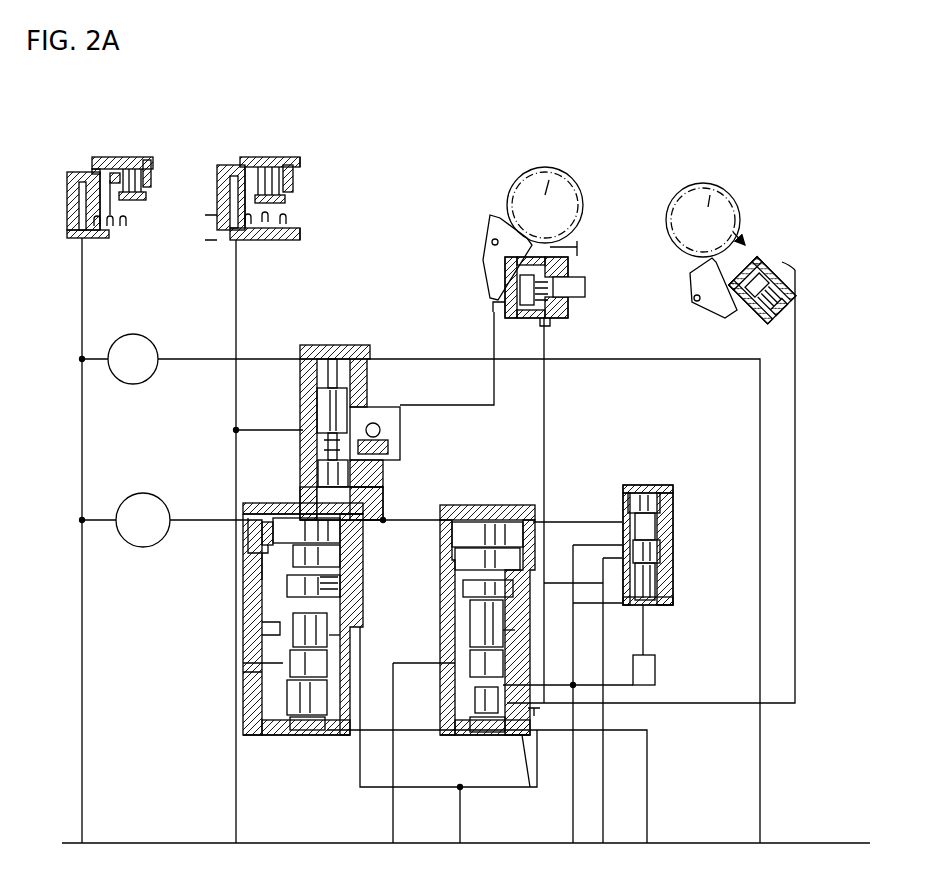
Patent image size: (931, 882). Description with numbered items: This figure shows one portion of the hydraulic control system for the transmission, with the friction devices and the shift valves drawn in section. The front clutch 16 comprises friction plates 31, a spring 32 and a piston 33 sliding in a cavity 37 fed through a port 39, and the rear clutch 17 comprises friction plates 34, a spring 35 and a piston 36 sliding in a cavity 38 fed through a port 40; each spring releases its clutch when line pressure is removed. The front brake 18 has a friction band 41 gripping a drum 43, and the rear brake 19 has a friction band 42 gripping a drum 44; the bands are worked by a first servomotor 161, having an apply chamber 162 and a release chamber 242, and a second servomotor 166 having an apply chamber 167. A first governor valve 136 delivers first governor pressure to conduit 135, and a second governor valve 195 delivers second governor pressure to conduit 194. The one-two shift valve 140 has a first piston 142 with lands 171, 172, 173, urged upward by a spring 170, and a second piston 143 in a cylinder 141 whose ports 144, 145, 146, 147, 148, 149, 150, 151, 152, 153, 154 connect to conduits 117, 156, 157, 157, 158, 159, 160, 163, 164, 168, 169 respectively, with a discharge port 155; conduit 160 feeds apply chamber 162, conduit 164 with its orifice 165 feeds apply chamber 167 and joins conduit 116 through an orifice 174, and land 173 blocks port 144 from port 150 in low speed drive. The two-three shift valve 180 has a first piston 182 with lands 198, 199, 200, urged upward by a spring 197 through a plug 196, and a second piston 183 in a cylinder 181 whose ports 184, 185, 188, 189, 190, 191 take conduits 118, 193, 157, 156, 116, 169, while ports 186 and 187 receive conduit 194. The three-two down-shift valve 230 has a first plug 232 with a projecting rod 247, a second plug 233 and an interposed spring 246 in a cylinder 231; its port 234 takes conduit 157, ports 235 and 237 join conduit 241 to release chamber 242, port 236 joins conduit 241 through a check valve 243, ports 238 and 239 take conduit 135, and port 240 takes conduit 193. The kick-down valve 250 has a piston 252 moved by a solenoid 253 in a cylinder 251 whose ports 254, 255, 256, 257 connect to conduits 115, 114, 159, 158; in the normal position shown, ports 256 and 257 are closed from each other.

The front clutch 16 is at (90, 181).
The rear clutch 17 is at (249, 177).
The front brake 18 is at (556, 238).
The rear brake 19 is at (752, 230).
The friction plates 31 is at (140, 175).
The spring 32 is at (127, 222).
The piston 33 is at (86, 238).
The friction plates 34 is at (272, 172).
The spring 35 is at (286, 216).
The piston 36 is at (247, 242).
The cavity 37 is at (66, 230).
The cavity 38 is at (219, 218).
The port 39 is at (80, 240).
The port 40 is at (232, 242).
The friction band 41 is at (580, 194).
The friction band 42 is at (724, 200).
The drum 43 is at (541, 198).
The drum 44 is at (697, 214).
The conduit 114 is at (605, 824).
The conduit 115 is at (575, 822).
The conduit 116 is at (362, 690).
The conduit 117 is at (84, 430).
The conduit 118 is at (238, 818).
The conduit 135 is at (205, 361).
The first governor valve 136 is at (119, 359).
The 1-2 shift valve 140 is at (493, 608).
The cylinder 141 is at (465, 612).
The first piston 142 is at (500, 615).
The second piston 143 is at (523, 530).
The port 144 is at (460, 672).
The port 145 is at (463, 585).
The port 146 is at (455, 560).
The port 147 is at (452, 530).
The port 148 is at (545, 520).
The port 149 is at (520, 555).
The port 150 is at (525, 648).
The port 151 is at (503, 683).
The port 152 is at (584, 654).
The port 153 is at (498, 737).
The port 154 is at (440, 737).
The discharge port 155 is at (452, 660).
The conduit 156 is at (452, 582).
The conduit 157 is at (395, 518).
The conduit 158 is at (580, 520).
The conduit 159 is at (583, 600).
The conduit 160 is at (546, 437).
The first servomotor 161 is at (585, 288).
The apply chamber 162 is at (560, 320).
The conduit 163 is at (630, 680).
The conduit 164 is at (797, 540).
The orifice 165 is at (528, 790).
The second servomotor 166 is at (776, 255).
The apply chamber 167 is at (786, 274).
The conduit 168 is at (557, 732).
The conduit 169 is at (403, 737).
The spring 170 is at (475, 737).
The land 171 is at (500, 585).
The land 172 is at (512, 632).
The land 173 is at (503, 660).
The orifice 174 is at (550, 716).
The 2-3 shift valve 180 is at (287, 662).
The cylinder 181 is at (290, 722).
The first piston 182 is at (287, 588).
The second piston 183 is at (262, 565).
The port 184 is at (283, 668).
The port 185 is at (280, 628).
The port 186 is at (250, 548).
The port 187 is at (266, 520).
The port 188 is at (342, 530).
The port 189 is at (342, 560).
The port 190 is at (329, 618).
The port 191 is at (342, 740).
The conduit 193 is at (238, 328).
The conduit 194 is at (208, 517).
The second governor valve 195 is at (162, 520).
The plug 196 is at (288, 695).
The spring 197 is at (300, 738).
The land 198 is at (340, 588).
The land 199 is at (340, 635).
The land 200 is at (329, 660).
The 3-2 down-shift valve 230 is at (340, 392).
The cylinder 231 is at (352, 388).
The first plug 232 is at (317, 392).
The second plug 233 is at (318, 470).
The port 234 is at (365, 488).
The port 235 is at (378, 467).
The port 236 is at (395, 414).
The port 237 is at (352, 402).
The port 238 is at (365, 348).
The port 239 is at (300, 348).
The port 240 is at (300, 432).
The conduit 241 is at (448, 407).
The release chamber 242 is at (512, 320).
The check valve 243 is at (385, 440).
The spring 246 is at (322, 455).
The projecting rod 247 is at (303, 506).
The kick-down valve 250 is at (659, 500).
The cylinder 251 is at (626, 502).
The piston 252 is at (660, 552).
The solenoid 253 is at (655, 668).
The port 254 is at (641, 630).
The port 255 is at (600, 583).
The port 256 is at (618, 560).
The port 257 is at (610, 545).